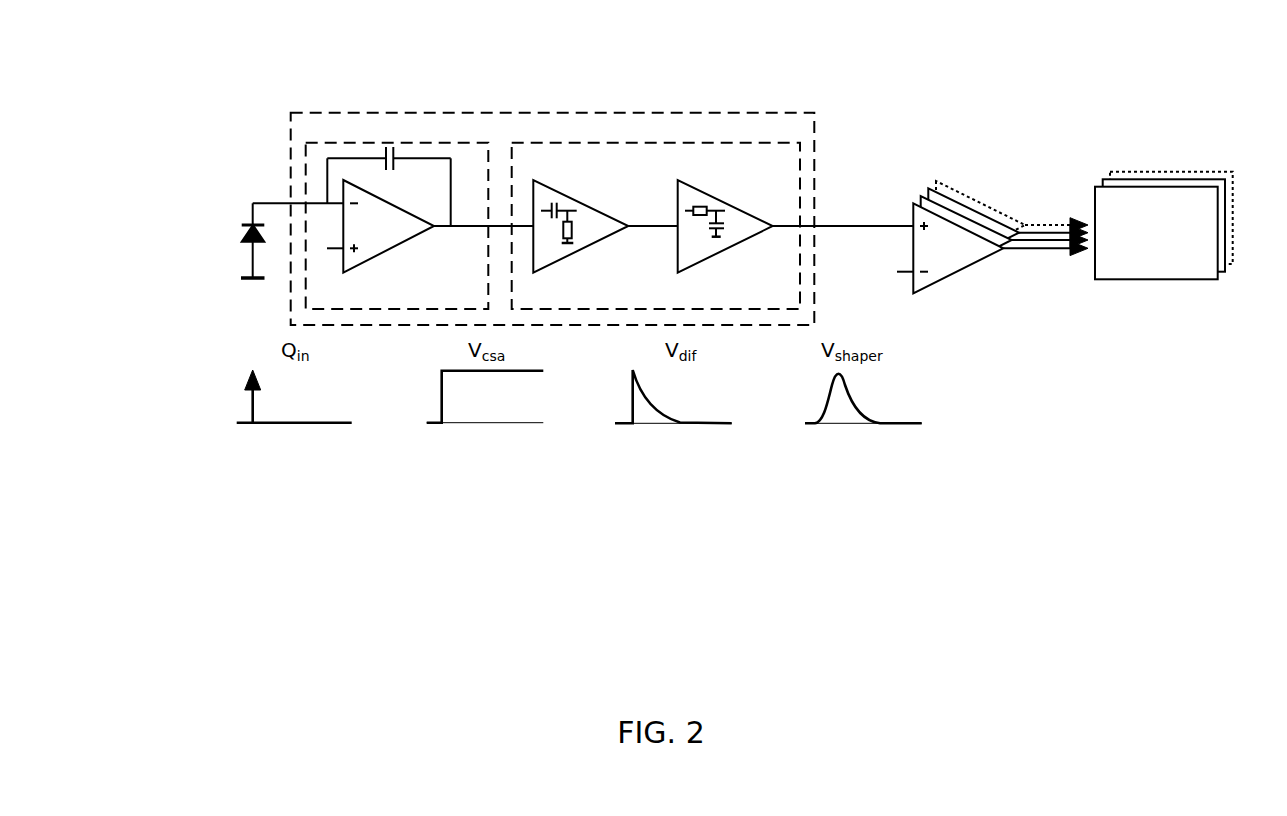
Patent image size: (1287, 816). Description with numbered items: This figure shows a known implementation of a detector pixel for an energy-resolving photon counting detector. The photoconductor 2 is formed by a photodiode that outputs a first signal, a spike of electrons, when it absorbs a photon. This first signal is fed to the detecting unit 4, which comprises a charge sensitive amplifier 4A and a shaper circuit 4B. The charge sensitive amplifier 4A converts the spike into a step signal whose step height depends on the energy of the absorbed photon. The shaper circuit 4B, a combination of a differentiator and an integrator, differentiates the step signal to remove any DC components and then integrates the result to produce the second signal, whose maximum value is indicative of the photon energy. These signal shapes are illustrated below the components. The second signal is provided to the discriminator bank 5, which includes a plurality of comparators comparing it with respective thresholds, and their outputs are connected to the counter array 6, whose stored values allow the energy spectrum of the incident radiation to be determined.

The photoconductor 2 is at (233, 233).
The detecting unit 4 is at (467, 112).
The charge sensitive amplifier 4A is at (353, 142).
The shaper circuit 4B is at (585, 142).
The discriminator bank 5 is at (937, 182).
The counter array 6 is at (1170, 172).